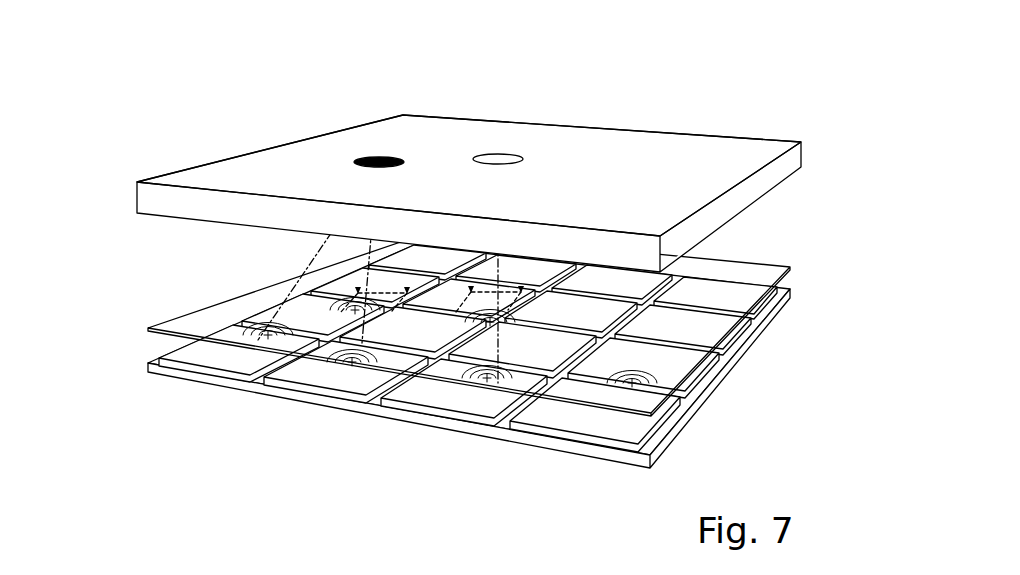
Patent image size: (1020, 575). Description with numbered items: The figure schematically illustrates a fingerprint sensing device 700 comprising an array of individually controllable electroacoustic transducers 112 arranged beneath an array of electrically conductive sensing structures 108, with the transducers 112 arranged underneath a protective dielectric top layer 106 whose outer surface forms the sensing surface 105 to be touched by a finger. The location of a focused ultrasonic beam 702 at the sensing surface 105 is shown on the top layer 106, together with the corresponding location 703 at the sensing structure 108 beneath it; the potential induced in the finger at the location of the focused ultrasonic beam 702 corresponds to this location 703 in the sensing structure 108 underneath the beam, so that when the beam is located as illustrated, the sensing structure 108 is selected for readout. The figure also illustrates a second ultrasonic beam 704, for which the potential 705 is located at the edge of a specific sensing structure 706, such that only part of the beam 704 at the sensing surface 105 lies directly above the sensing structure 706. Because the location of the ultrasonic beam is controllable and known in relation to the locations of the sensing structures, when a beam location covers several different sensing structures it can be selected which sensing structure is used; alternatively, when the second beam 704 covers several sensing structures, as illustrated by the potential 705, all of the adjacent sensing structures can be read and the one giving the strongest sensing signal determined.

The sensing device 700 is at (711, 59).
The protective dielectric top layer 106 is at (137, 198).
The sensing surface 105 is at (268, 167).
The focused ultrasonic beam 702 is at (372, 158).
The second ultrasonic beam 704 is at (492, 158).
The electrically conductive sensing structure 108 is at (195, 310).
The electroacoustic transducer 112 is at (222, 372).
The location at the sensing structure 703 is at (393, 300).
The potential 705 is at (520, 300).
The specific sensing structure 706 is at (703, 372).